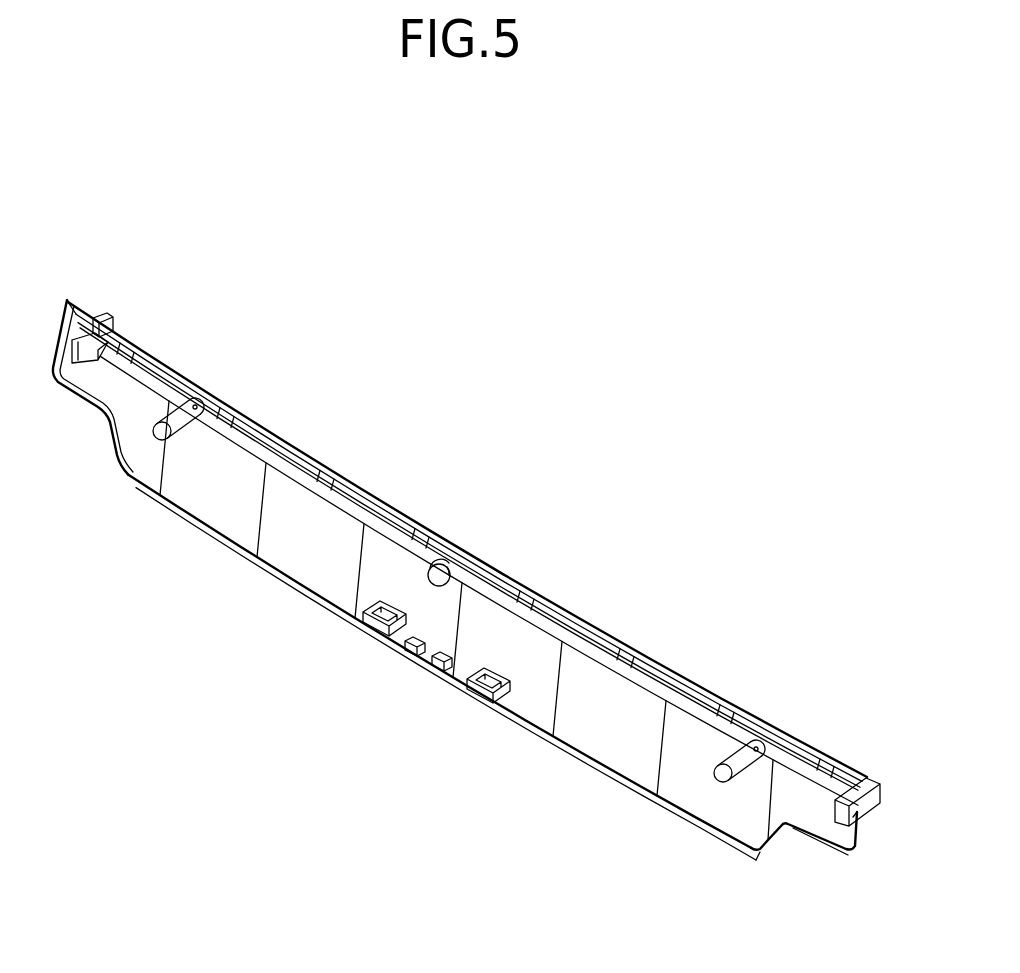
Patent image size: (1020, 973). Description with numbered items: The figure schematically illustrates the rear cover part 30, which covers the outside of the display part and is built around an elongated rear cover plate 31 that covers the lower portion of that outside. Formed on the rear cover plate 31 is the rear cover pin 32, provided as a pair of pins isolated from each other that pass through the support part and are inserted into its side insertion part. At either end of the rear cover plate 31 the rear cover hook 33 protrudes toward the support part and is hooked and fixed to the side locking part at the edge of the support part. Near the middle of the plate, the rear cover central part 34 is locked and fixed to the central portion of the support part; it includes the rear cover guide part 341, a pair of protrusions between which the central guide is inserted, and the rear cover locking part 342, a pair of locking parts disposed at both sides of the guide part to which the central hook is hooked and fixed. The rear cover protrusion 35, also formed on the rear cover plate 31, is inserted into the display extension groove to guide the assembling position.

The rear cover part 30 is at (853, 248).
The rear cover plate 31 is at (210, 508).
The rear cover pin 32 is at (765, 745).
The rear cover hook 33 is at (870, 780).
The rear cover central part 34 is at (445, 753).
The rear cover guide part 341 is at (412, 655).
The rear cover locking part 342 is at (475, 693).
The rear cover protrusion 35 is at (445, 572).